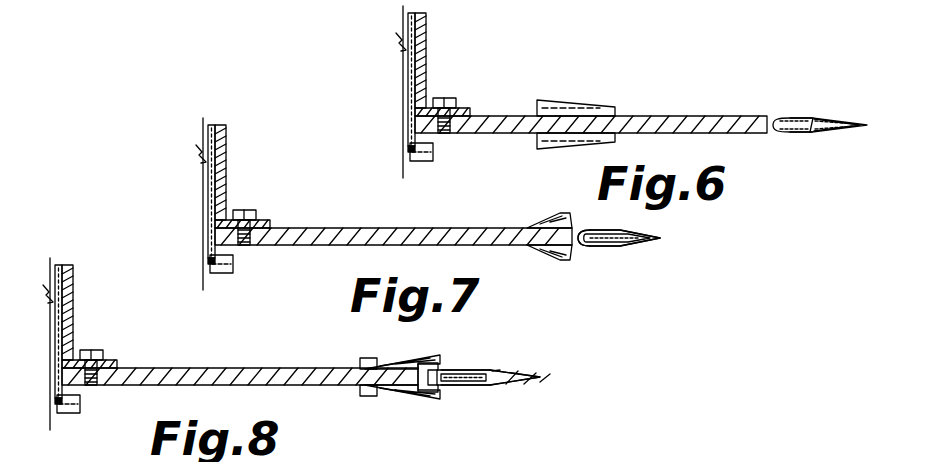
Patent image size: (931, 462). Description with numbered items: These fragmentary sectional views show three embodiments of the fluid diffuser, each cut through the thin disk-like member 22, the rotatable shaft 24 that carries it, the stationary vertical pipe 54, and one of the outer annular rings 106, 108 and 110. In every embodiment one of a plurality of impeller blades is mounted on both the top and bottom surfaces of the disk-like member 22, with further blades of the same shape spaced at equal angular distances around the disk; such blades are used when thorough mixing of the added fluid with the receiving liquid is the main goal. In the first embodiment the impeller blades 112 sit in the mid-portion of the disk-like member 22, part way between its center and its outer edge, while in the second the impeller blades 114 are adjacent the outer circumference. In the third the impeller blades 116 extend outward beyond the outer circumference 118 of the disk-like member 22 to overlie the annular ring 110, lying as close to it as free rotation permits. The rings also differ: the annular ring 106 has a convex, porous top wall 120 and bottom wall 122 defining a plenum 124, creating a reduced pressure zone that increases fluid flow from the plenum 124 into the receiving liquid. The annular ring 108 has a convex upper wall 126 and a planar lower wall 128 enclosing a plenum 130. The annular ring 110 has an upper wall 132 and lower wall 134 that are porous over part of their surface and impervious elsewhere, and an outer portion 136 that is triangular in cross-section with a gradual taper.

In FIG. 6, the disk-like member 22 is at (591, 101).
In FIG. 7, the disk-like member 22 is at (393, 214).
In FIG. 8, the disk-like member 22 is at (240, 355).
In FIG. 6, the rotatable shaft 24 is at (444, 87).
In FIG. 7, the rotatable shaft 24 is at (245, 199).
In FIG. 8, the rotatable shaft 24 is at (95, 339).
In FIG. 6, the stationary vertical pipe 54 is at (384, 92).
In FIG. 7, the stationary vertical pipe 54 is at (182, 204).
In FIG. 8, the stationary vertical pipe 54 is at (35, 344).
In FIG. 6, the outer annular ring 106 is at (820, 117).
In FIG. 7, the outer annular ring 108 is at (612, 248).
In FIG. 8, the outer annular ring 110 is at (466, 369).
In FIG. 6, the impeller blades 112 is at (580, 100).
In FIG. 7, the impeller blades 114 is at (545, 222).
In FIG. 8, the impeller blades 116 is at (432, 355).
In FIG. 8, the outer circumference 118 is at (416, 392).
In FIG. 6, the top wall 120 is at (790, 117).
In FIG. 6, the bottom wall 122 is at (800, 134).
In FIG. 6, the plenum 124 is at (818, 134).
In FIG. 7, the upper wall 126 is at (628, 232).
In FIG. 7, the lower wall 128 is at (635, 248).
In FIG. 7, the plenum 130 is at (594, 247).
In FIG. 8, the upper wall 132 is at (478, 371).
In FIG. 8, the lower wall 134 is at (484, 388).
In FIG. 8, the outer portion 136 is at (535, 378).